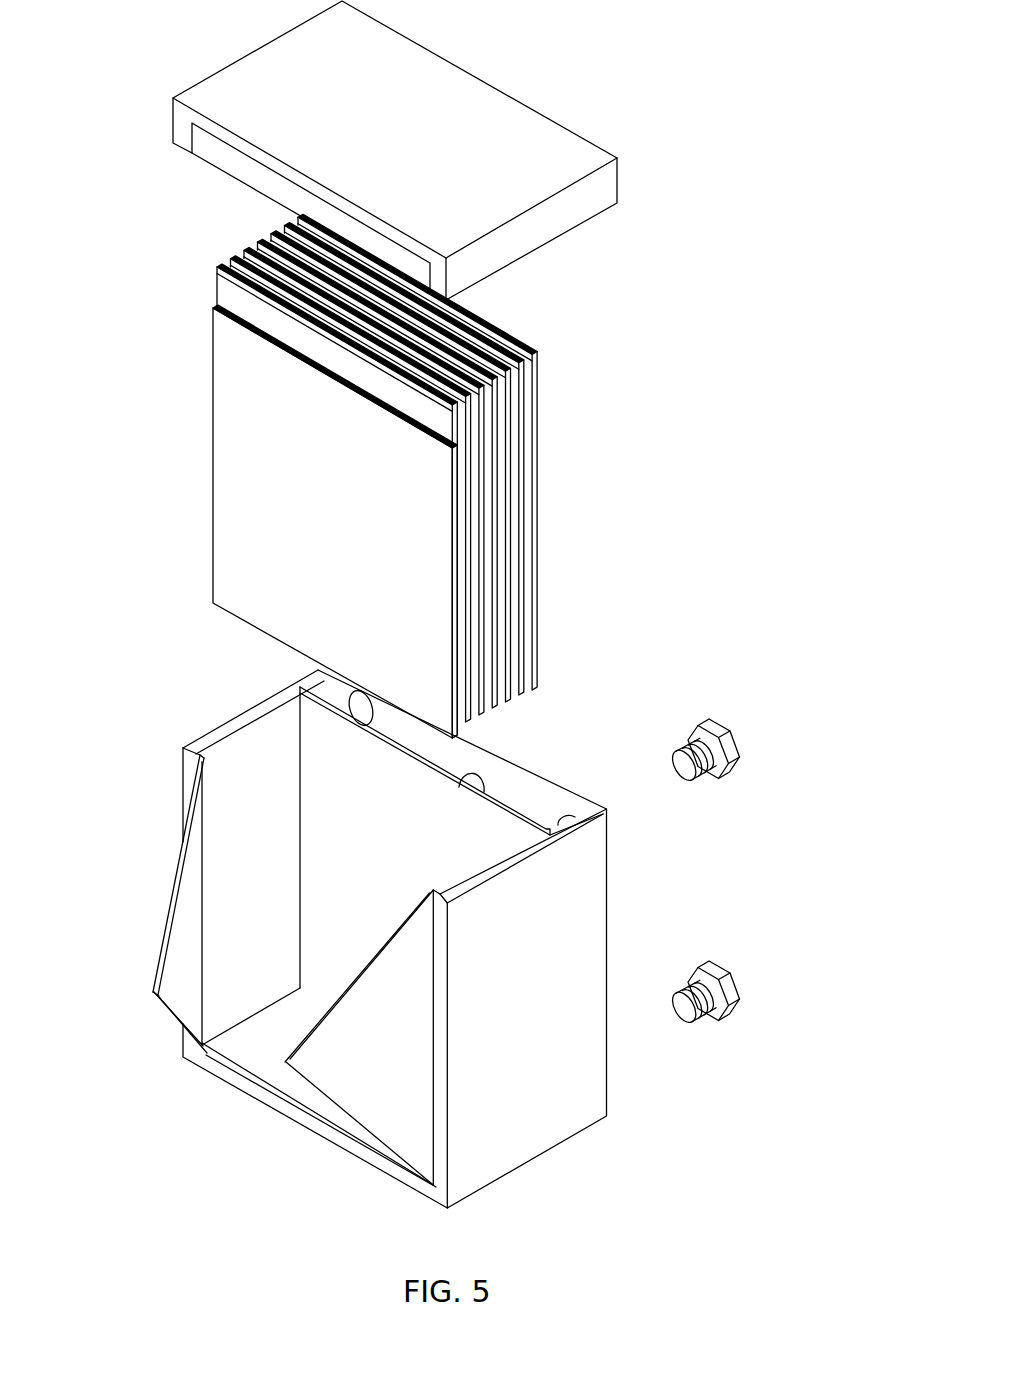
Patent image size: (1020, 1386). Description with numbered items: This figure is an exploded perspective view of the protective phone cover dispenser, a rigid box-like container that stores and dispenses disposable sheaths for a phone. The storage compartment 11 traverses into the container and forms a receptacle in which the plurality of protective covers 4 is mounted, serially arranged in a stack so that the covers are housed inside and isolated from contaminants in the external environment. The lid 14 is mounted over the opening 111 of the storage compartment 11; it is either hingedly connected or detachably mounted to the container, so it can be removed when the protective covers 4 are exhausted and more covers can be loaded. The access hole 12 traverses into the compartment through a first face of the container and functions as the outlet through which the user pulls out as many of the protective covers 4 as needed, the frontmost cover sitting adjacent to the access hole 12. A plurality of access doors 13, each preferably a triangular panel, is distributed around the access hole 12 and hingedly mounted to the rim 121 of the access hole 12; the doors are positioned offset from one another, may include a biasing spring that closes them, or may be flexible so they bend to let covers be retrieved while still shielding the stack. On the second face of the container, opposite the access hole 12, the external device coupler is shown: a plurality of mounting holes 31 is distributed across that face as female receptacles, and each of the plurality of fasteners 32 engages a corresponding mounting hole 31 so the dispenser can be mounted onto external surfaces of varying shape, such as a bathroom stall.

The protective covers 4 is at (130, 423).
The lid 14 is at (597, 158).
The storage compartment 11 is at (353, 921).
The opening 111 is at (289, 680).
The access hole 12 is at (319, 1088).
The rim 121 is at (209, 1051).
The access doors 13 is at (172, 915).
The mounting holes 31 is at (363, 706).
The fasteners 32 is at (713, 727).